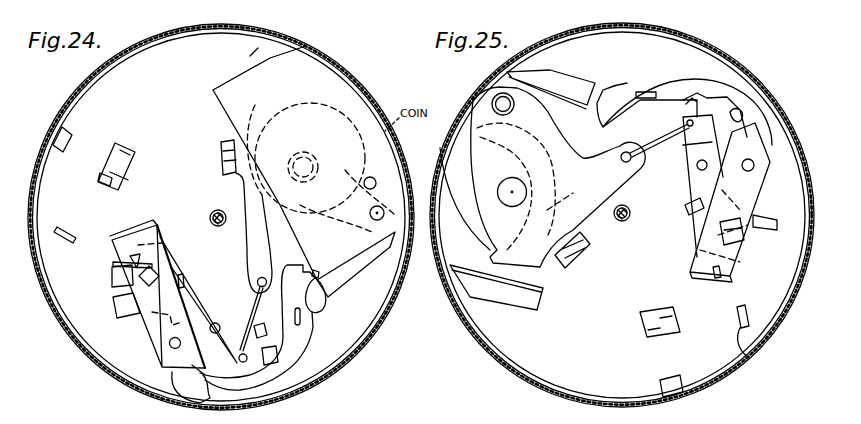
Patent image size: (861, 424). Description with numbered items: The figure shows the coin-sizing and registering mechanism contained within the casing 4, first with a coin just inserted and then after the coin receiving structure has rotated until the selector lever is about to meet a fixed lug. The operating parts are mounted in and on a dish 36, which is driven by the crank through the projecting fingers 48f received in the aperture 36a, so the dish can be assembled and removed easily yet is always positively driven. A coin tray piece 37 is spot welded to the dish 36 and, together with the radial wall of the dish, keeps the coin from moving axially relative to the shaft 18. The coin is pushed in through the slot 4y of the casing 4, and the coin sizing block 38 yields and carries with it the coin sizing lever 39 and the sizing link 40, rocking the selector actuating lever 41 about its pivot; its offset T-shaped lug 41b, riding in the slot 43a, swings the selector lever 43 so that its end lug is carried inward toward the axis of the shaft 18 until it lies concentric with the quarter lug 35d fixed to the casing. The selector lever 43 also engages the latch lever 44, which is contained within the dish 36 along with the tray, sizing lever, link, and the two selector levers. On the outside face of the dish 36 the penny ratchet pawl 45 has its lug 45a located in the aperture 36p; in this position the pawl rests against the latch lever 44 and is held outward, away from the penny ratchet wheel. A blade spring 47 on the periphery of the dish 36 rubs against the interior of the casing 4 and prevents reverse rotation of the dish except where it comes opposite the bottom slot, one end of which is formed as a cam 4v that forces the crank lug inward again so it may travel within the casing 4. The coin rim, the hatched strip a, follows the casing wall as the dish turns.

In FIG. 24, the casing 4 is at (394, 305).
In FIG. 25, the casing 4 is at (672, 40).
In FIG. 24, the casing rim strip a is at (303, 52).
In FIG. 24, the slot 4y is at (368, 104).
In FIG. 25, the slot 4y is at (770, 107).
In FIG. 24, the cam 4v is at (348, 378).
In FIG. 25, the cam 4v is at (748, 376).
In FIG. 24, the shaft 18 is at (218, 209).
In FIG. 25, the shaft 18 is at (622, 222).
In FIG. 24, the quarter lug 35d is at (318, 310).
In FIG. 25, the quarter lug 35d is at (722, 277).
In FIG. 24, the dish 36 is at (254, 53).
In FIG. 25, the dish 36 is at (715, 68).
In FIG. 24, the aperture 36a is at (122, 168).
In FIG. 24, the aperture 36p is at (68, 246).
In FIG. 25, the aperture 36p is at (750, 318).
In FIG. 24, the coin tray piece 37 is at (330, 88).
In FIG. 25, the coin tray piece 37 is at (570, 83).
In FIG. 25, the coin sizing block 38 is at (542, 177).
In FIG. 24, the coin sizing lever 39 is at (247, 246).
In FIG. 25, the coin sizing lever 39 is at (618, 168).
In FIG. 24, the sizing link 40 is at (256, 314).
In FIG. 25, the sizing link 40 is at (647, 146).
In FIG. 24, the selector actuating lever 41 is at (239, 315).
In FIG. 25, the selector actuating lever 41 is at (688, 167).
In FIG. 24, the offset T-shaped lug 41b is at (158, 228).
In FIG. 24, the selector lever 43 is at (148, 332).
In FIG. 25, the selector lever 43 is at (752, 183).
In FIG. 24, the slot 43a is at (160, 258).
In FIG. 25, the slot 43a is at (745, 244).
In FIG. 24, the latch lever 44 is at (292, 350).
In FIG. 25, the latch lever 44 is at (670, 83).
In FIG. 24, the penny ratchet pawl 45 is at (162, 402).
In FIG. 25, the penny ratchet pawl 45 is at (592, 400).
In FIG. 24, the lug 45a is at (70, 230).
In FIG. 25, the lug 45a is at (748, 342).
In FIG. 24, the blade spring 47 is at (230, 410).
In FIG. 24, the projecting fingers 48f is at (103, 173).
In FIG. 25, the projecting fingers 48f is at (668, 332).